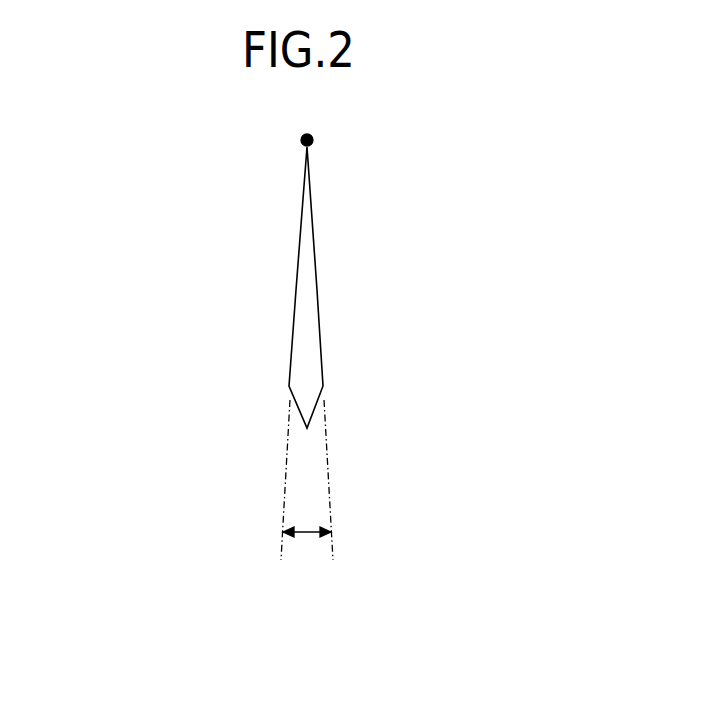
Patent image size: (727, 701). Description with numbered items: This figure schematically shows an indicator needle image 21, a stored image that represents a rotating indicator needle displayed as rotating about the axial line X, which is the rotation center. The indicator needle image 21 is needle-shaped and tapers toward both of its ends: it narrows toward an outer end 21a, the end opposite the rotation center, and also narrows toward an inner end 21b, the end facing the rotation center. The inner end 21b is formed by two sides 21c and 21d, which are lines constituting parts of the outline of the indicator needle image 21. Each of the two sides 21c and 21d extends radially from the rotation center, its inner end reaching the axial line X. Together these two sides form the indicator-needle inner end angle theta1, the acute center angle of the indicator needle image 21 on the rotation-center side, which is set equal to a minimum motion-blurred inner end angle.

The indicator needle image 21 is at (262, 262).
The axial line X is at (314, 140).
The inner end 21b is at (330, 237).
The side 21c is at (317, 290).
The side 21d is at (296, 290).
The outer end 21a is at (307, 428).
The indicator-needle inner end angle theta1 is at (305, 533).